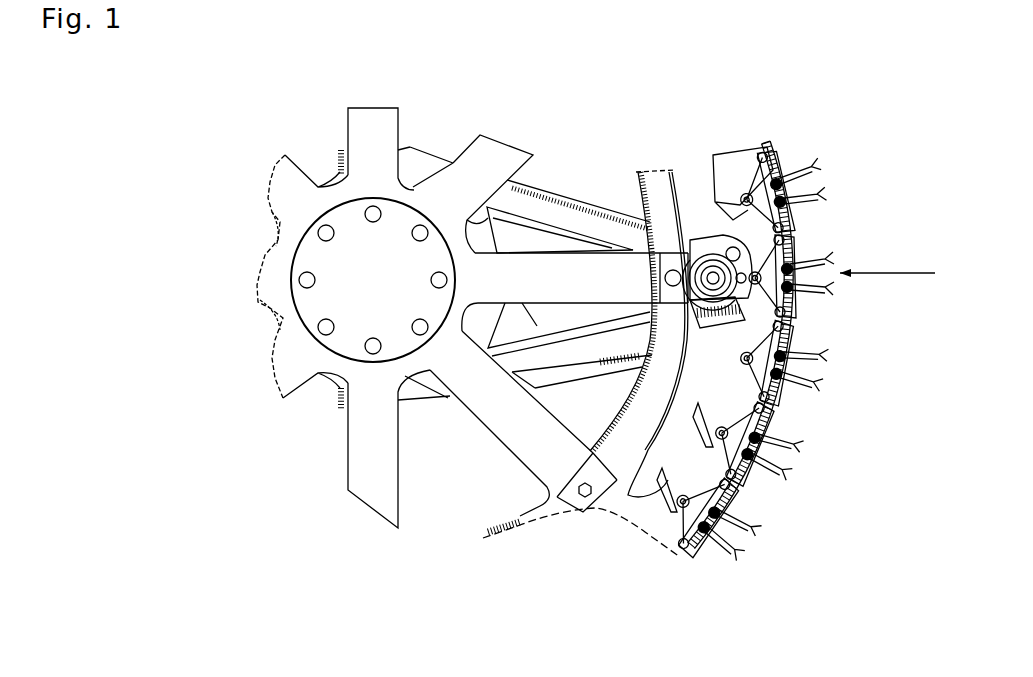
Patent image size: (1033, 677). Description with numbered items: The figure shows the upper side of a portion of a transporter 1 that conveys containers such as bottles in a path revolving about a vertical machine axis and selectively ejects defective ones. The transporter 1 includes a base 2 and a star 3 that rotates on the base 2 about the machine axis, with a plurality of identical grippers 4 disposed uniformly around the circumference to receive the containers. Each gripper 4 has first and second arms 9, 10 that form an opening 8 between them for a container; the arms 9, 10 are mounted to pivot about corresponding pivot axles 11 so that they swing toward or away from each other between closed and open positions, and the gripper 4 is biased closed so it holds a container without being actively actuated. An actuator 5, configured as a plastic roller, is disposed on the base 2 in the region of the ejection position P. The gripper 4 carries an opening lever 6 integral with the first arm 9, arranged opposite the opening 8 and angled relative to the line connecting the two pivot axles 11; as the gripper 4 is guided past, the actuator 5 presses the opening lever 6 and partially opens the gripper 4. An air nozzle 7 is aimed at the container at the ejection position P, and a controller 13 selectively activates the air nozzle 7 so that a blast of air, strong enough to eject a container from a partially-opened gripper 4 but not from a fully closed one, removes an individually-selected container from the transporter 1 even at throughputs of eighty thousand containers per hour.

The transporter 1 is at (572, 96).
The base 2 is at (582, 180).
The star 3 is at (597, 522).
The gripper 4 is at (767, 532).
The actuator 5 is at (719, 355).
The opening lever 6 is at (748, 256).
The air nozzle 7 is at (752, 303).
The opening 8 is at (747, 537).
The first arm 9 is at (707, 515).
The second arm 10 is at (708, 518).
The pivot axle 11 is at (691, 505).
The controller 13 is at (572, 373).
The ejection position P is at (900, 266).